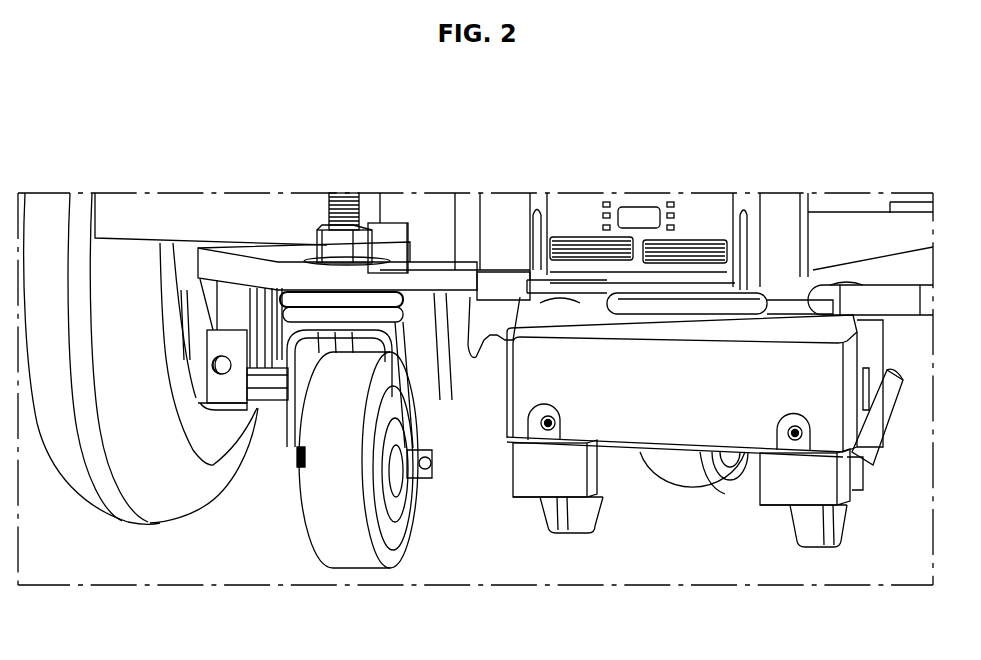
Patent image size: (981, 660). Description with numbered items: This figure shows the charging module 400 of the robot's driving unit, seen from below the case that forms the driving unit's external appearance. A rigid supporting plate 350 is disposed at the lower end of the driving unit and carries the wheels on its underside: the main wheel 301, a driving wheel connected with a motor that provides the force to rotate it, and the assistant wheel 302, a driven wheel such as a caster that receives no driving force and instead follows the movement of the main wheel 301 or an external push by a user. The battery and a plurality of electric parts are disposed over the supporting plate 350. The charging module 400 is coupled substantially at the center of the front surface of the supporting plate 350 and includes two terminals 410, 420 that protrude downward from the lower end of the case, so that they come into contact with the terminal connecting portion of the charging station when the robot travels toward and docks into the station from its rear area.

The main wheel 301 is at (158, 507).
The assistant wheel 302 is at (347, 557).
The supporting plate 350 is at (235, 268).
The charging module 400 is at (526, 551).
The terminal 410 is at (567, 530).
The terminal 420 is at (812, 530).